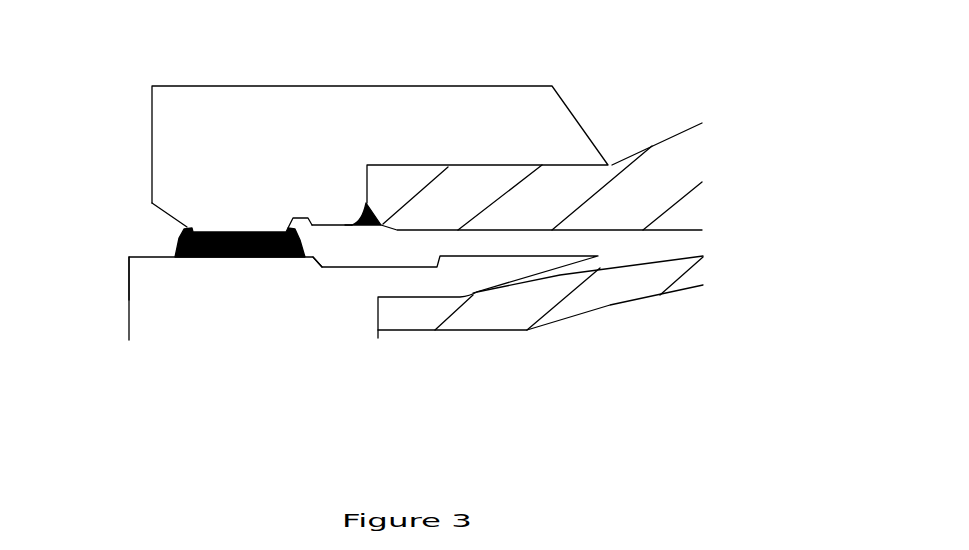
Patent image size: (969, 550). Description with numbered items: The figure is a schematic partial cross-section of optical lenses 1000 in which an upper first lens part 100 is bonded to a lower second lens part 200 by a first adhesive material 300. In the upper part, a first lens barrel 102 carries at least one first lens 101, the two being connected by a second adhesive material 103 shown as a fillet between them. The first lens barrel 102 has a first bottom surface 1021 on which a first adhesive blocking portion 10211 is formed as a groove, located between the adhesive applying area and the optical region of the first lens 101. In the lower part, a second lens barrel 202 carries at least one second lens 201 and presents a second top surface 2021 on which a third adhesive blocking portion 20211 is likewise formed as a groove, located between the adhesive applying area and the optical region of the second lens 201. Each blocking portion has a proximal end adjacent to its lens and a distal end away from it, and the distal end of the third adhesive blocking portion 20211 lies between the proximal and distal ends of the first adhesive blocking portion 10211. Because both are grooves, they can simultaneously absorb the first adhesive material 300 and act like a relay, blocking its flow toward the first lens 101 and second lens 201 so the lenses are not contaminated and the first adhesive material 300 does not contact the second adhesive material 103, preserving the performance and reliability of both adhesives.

The optical lenses 1000 is at (583, 110).
The first terminal 100 is at (148, 108).
The first lens 101 is at (557, 205).
The first lens barrel 102 is at (337, 130).
The first bottom surface 1021 is at (217, 232).
The first adhesive blocking portion 10211 is at (295, 215).
The second adhesive material 103 is at (368, 200).
The first adhesive material 300 is at (173, 252).
The second lens barrel 200 is at (678, 311).
The second lens 201 is at (472, 318).
The second terminal body portion 202 is at (290, 322).
The second top surface 2021 is at (150, 257).
The third adhesive blocking portion 20211 is at (335, 258).